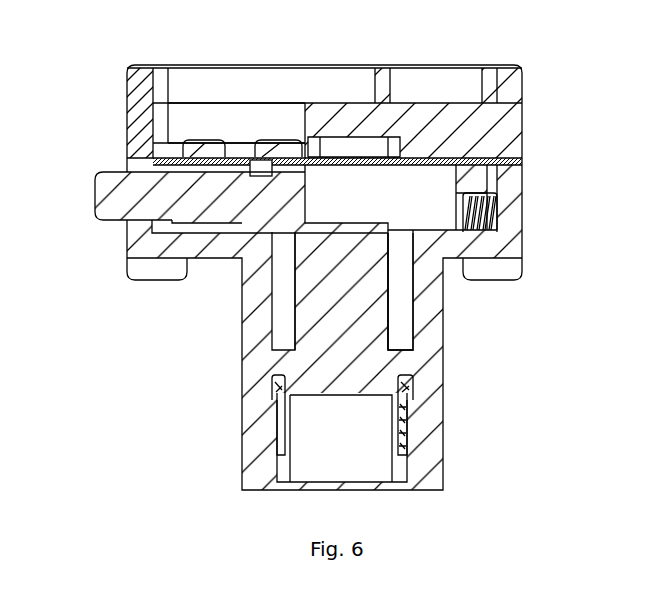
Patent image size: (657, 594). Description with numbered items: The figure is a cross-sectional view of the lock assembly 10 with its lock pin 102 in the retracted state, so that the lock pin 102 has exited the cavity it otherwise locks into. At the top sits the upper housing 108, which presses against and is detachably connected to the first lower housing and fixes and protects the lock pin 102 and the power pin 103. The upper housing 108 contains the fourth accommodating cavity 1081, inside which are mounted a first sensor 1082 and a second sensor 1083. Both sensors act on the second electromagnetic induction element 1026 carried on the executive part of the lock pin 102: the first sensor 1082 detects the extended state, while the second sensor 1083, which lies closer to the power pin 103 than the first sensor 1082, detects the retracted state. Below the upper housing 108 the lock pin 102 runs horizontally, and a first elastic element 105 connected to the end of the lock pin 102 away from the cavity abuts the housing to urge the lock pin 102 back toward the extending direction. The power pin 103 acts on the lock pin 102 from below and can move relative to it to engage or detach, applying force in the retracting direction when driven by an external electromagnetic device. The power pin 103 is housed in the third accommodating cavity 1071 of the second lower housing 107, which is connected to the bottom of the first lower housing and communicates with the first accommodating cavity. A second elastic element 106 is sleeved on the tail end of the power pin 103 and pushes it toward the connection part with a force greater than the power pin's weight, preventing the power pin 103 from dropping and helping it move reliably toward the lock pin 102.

The lock assembly 10 is at (341, 253).
The lock pin 102 is at (155, 192).
The power pin 103 is at (320, 352).
The first elastic element 105 is at (496, 190).
The second elastic element 106 is at (277, 433).
The second lower housing 107 is at (433, 420).
The third accommodating cavity 1071 is at (397, 317).
The upper housing 108 is at (487, 132).
The fourth accommodating cavity 1081 is at (195, 121).
The first sensor 1082 is at (173, 152).
The second sensor 1083 is at (280, 148).
The second electromagnetic induction element 1026 is at (258, 167).